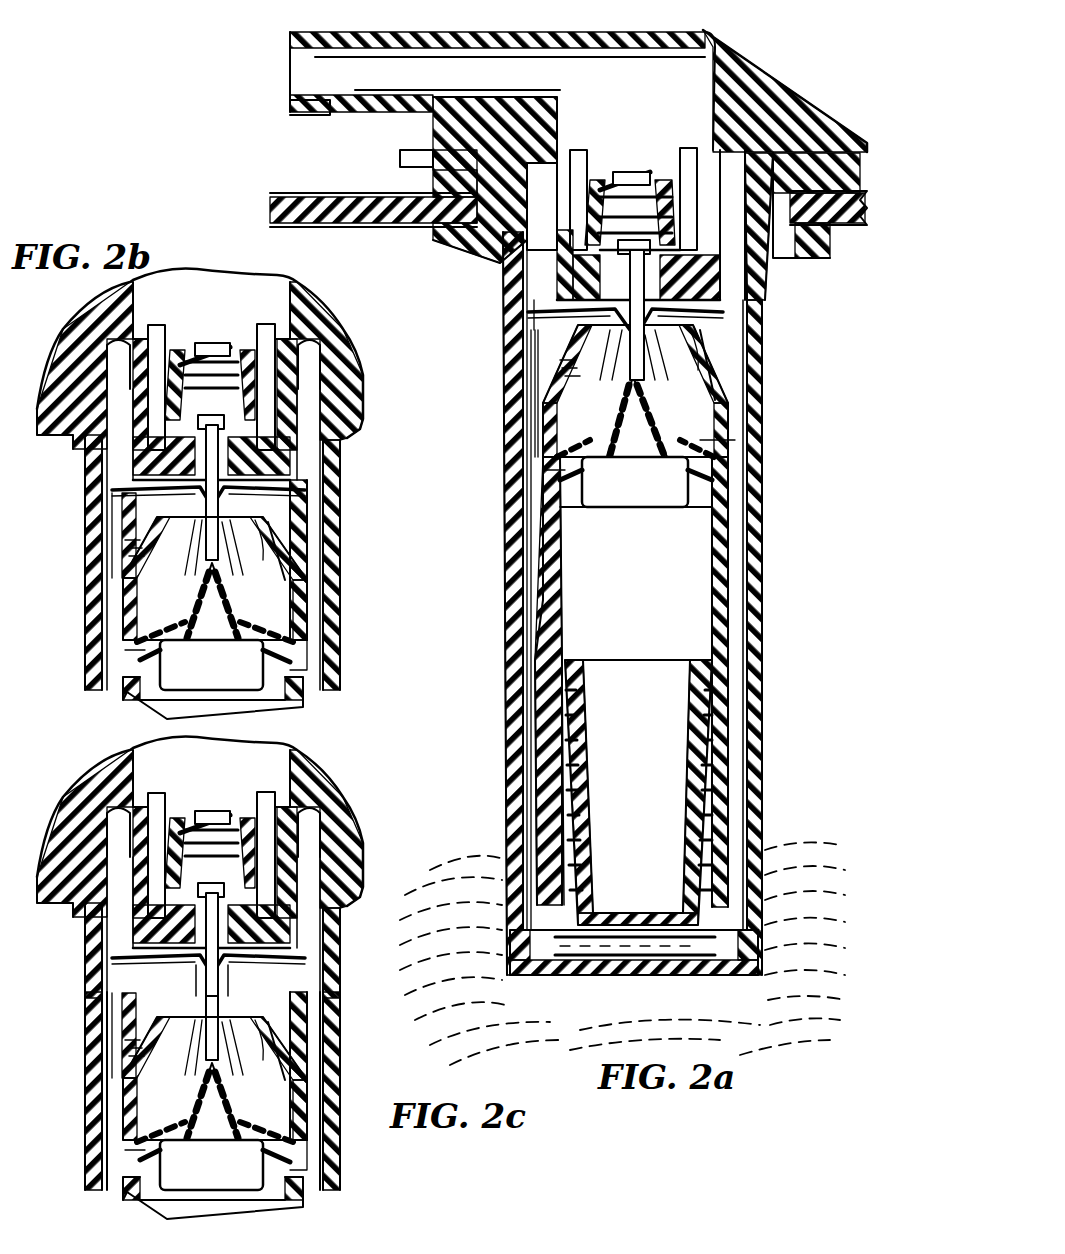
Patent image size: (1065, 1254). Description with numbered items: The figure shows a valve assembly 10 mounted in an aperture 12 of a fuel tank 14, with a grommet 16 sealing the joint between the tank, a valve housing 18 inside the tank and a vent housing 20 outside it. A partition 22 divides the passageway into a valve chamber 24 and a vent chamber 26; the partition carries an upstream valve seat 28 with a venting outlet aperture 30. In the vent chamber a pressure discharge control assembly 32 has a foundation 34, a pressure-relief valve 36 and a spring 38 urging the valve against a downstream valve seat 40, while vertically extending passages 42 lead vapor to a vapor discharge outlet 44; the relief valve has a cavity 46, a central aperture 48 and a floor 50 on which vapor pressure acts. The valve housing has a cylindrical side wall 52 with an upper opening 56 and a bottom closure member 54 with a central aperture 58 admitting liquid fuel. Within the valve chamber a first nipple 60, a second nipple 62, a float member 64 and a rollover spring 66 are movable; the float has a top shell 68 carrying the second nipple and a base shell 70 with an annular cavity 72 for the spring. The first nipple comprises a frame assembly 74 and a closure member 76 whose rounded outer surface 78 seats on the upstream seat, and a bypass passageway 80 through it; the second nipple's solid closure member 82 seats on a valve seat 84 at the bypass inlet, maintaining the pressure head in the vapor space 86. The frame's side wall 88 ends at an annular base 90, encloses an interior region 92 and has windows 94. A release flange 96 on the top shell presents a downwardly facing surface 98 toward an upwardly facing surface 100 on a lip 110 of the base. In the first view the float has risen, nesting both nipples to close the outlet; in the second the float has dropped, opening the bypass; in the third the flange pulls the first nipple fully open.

In FIG. 2A, the valve assembly 10 is at (775, 62).
In FIG. 2A, the aperture 12 is at (480, 258).
In FIG. 2B, the aperture 12 is at (60, 430).
In FIG. 2C, the aperture 12 is at (51, 905).
In FIG. 2A, the fuel tank 14 is at (355, 195).
In FIG. 2A, the grommet 16 is at (430, 185).
In FIG. 2A, the valve housing 18 is at (765, 535).
In FIG. 2B, the valve housing 18 is at (345, 670).
In FIG. 2C, the valve housing 18 is at (366, 1184).
In FIG. 2A, the vent housing 20 is at (790, 100).
In FIG. 2A, the partition 22 is at (540, 290).
In FIG. 2B, the partition 22 is at (118, 470).
In FIG. 2C, the partition 22 is at (81, 926).
In FIG. 2A, the valve chamber 24 is at (540, 375).
In FIG. 2B, the valve chamber 24 is at (118, 548).
In FIG. 2C, the valve chamber 24 is at (86, 1038).
In FIG. 2A, the vent chamber 26 is at (685, 80).
In FIG. 2B, the vent chamber 26 is at (243, 285).
In FIG. 2C, the vent chamber 26 is at (200, 814).
In FIG. 2A, the upstream valve seat 28 is at (600, 312).
In FIG. 2B, the upstream valve seat 28 is at (195, 488).
In FIG. 2C, the upstream valve seat 28 is at (208, 965).
In FIG. 2B, the venting outlet aperture 30 is at (92, 500).
In FIG. 2C, the venting outlet aperture 30 is at (76, 999).
In FIG. 2A, the pressure discharge control assembly 32 is at (602, 145).
In FIG. 2B, the pressure discharge control assembly 32 is at (176, 328).
In FIG. 2C, the pressure discharge control assembly 32 is at (165, 834).
In FIG. 2A, the foundation 34 is at (648, 170).
In FIG. 2B, the foundation 34 is at (228, 340).
In FIG. 2C, the foundation 34 is at (210, 825).
In FIG. 2A, the pressure-relief valve 36 is at (590, 230).
In FIG. 2B, the pressure-relief valve 36 is at (172, 405).
In FIG. 2C, the pressure-relief valve 36 is at (150, 900).
In FIG. 2A, the spring 38 is at (610, 178).
In FIG. 2B, the spring 38 is at (195, 345).
In FIG. 2C, the spring 38 is at (209, 814).
In FIG. 2A, the downstream valve seat 40 is at (690, 298).
In FIG. 2B, the downstream valve seat 40 is at (265, 475).
In FIG. 2C, the downstream valve seat 40 is at (226, 933).
In FIG. 2A, the vertically extending passages 42 is at (692, 145).
In FIG. 2B, the vertically extending passages 42 is at (268, 325).
In FIG. 2C, the vertically extending passages 42 is at (271, 833).
In FIG. 2A, the vapor discharge outlet 44 is at (300, 100).
In FIG. 2A, the cavity 46 is at (520, 330).
In FIG. 2A, the central aperture 48 is at (600, 248).
In FIG. 2B, the central aperture 48 is at (200, 420).
In FIG. 2C, the central aperture 48 is at (198, 908).
In FIG. 2A, the floor 50 is at (705, 270).
In FIG. 2B, the floor 50 is at (300, 455).
In FIG. 2C, the floor 50 is at (309, 926).
In FIG. 2A, the cylindrical side wall 52 is at (760, 385).
In FIG. 2B, the cylindrical side wall 52 is at (333, 560).
In FIG. 2C, the cylindrical side wall 52 is at (231, 1091).
In FIG. 2A, the bottom closure member 54 is at (745, 978).
In FIG. 2A, the upper opening 56 is at (768, 300).
In FIG. 2B, the upper opening 56 is at (345, 470).
In FIG. 2C, the upper opening 56 is at (363, 925).
In FIG. 2A, the central aperture 58 is at (660, 975).
In FIG. 2A, the first nipple 60 is at (690, 312).
In FIG. 2B, the first nipple 60 is at (240, 488).
In FIG. 2C, the first nipple 60 is at (215, 965).
In FIG. 2A, the second nipple 62 is at (620, 355).
In FIG. 2B, the second nipple 62 is at (200, 528).
In FIG. 2C, the second nipple 62 is at (215, 1078).
In FIG. 2A, the float member 64 is at (748, 560).
In FIG. 2A, the rollover spring 66 is at (575, 760).
In FIG. 2A, the top shell 68 is at (545, 520).
In FIG. 2B, the top shell 68 is at (125, 690).
In FIG. 2C, the top shell 68 is at (185, 1198).
In FIG. 2A, the base shell 70 is at (530, 765).
In FIG. 2A, the annular cavity 72 is at (572, 800).
In FIG. 2A, the frame assembly 74 is at (712, 385).
In FIG. 2B, the frame assembly 74 is at (290, 570).
In FIG. 2C, the frame assembly 74 is at (291, 1051).
In FIG. 2A, the closure member 76 is at (695, 355).
In FIG. 2B, the closure member 76 is at (258, 522).
In FIG. 2C, the closure member 76 is at (275, 1035).
In FIG. 2C, the rounded outer surface 78 is at (229, 948).
In FIG. 2A, the bypass passageway 80 is at (625, 398).
In FIG. 2B, the bypass passageway 80 is at (205, 575).
In FIG. 2C, the bypass passageway 80 is at (200, 1101).
In FIG. 2A, the solid closure member 82 is at (645, 345).
In FIG. 2B, the solid closure member 82 is at (220, 528).
In FIG. 2C, the solid closure member 82 is at (238, 1047).
In FIG. 2A, the valve seat 84 is at (617, 340).
In FIG. 2B, the valve seat 84 is at (195, 515).
In FIG. 2C, the valve seat 84 is at (190, 1035).
In FIG. 2A, the vapor space 86 is at (826, 306).
In FIG. 2A, the side wall 88 is at (540, 425).
In FIG. 2B, the side wall 88 is at (120, 600).
In FIG. 2C, the side wall 88 is at (96, 1051).
In FIG. 2A, the annular base 90 is at (733, 490).
In FIG. 2B, the annular base 90 is at (303, 668).
In FIG. 2C, the annular base 90 is at (332, 1155).
In FIG. 2A, the interior region 92 is at (735, 430).
In FIG. 2B, the interior region 92 is at (300, 605).
In FIG. 2C, the interior region 92 is at (337, 1066).
In FIG. 2A, the windows 94 is at (580, 357).
In FIG. 2B, the windows 94 is at (158, 532).
In FIG. 2C, the windows 94 is at (135, 1036).
In FIG. 2A, the release flange 96 is at (560, 455).
In FIG. 2B, the release flange 96 is at (137, 640).
In FIG. 2C, the release flange 96 is at (215, 1118).
In FIG. 2A, the downwardly facing surface 98 is at (555, 470).
In FIG. 2B, the downwardly facing surface 98 is at (135, 650).
In FIG. 2C, the downwardly facing surface 98 is at (102, 1140).
In FIG. 2A, the upwardly facing surface 100 is at (585, 467).
In FIG. 2B, the upwardly facing surface 100 is at (160, 647).
In FIG. 2C, the upwardly facing surface 100 is at (211, 1165).
In FIG. 2A, the lip 110 is at (585, 485).
In FIG. 2B, the lip 110 is at (160, 665).
In FIG. 2C, the lip 110 is at (215, 1165).